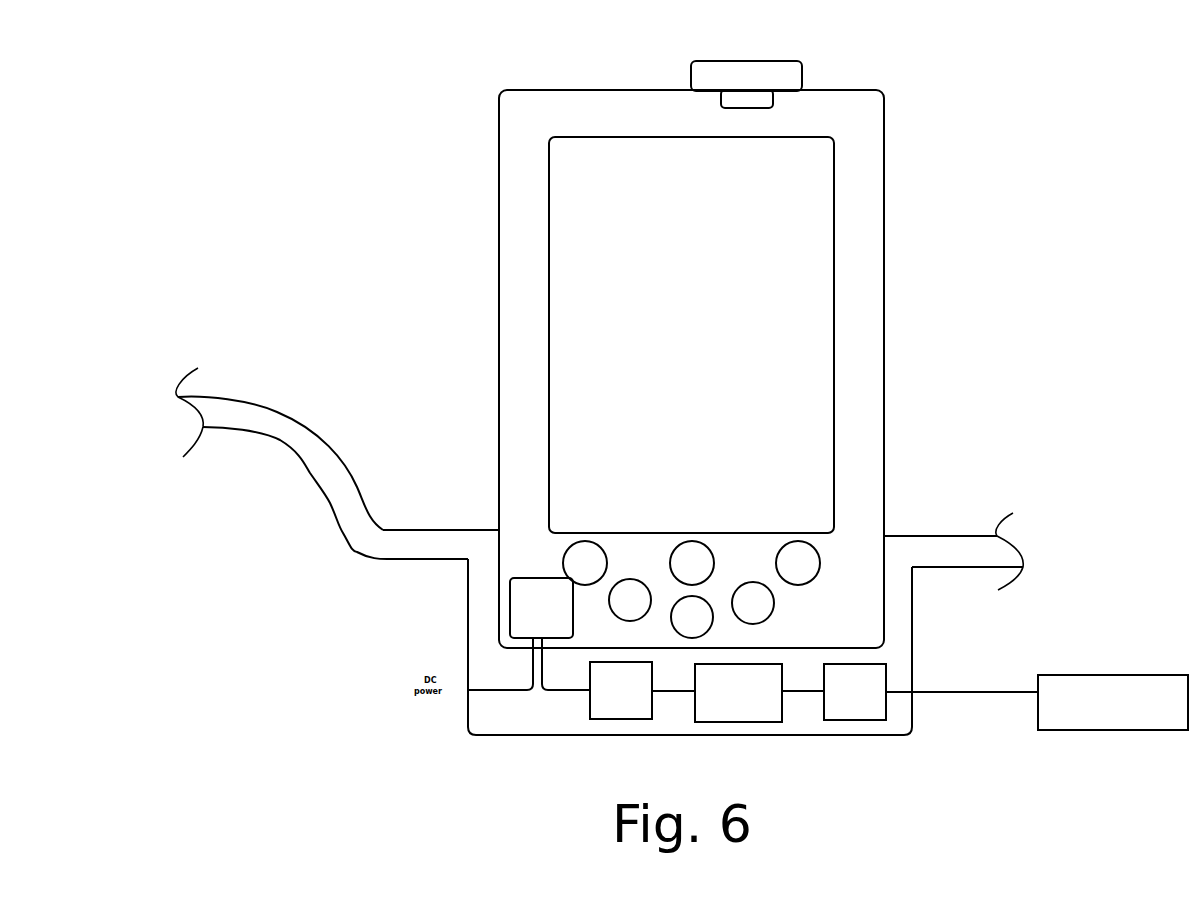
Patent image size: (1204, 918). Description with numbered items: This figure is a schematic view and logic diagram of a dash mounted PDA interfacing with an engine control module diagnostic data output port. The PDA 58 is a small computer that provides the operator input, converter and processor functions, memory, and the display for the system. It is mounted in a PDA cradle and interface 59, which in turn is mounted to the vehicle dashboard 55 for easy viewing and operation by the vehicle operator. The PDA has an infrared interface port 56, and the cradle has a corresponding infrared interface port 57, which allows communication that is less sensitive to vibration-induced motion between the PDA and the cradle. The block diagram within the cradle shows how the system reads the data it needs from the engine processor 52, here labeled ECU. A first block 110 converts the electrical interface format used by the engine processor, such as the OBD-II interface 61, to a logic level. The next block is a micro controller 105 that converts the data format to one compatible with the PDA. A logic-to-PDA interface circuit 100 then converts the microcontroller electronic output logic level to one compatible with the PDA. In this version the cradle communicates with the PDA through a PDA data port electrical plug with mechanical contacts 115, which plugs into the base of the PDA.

The engine processor 52 is at (1113, 722).
The vehicle dashboard 55 is at (297, 437).
The infrared interface port 56 is at (735, 100).
The infrared interface port 57 is at (767, 72).
The PDA 58 is at (747, 216).
The PDA cradle and interface 59 is at (898, 590).
The OBD-II interface 61 is at (1004, 693).
The logic-to-PDA interface circuit 100 is at (620, 717).
The micro controller 105 is at (735, 717).
The first block 110 is at (852, 717).
The PDA data port electrical plug with mechanical contacts 115 is at (517, 621).